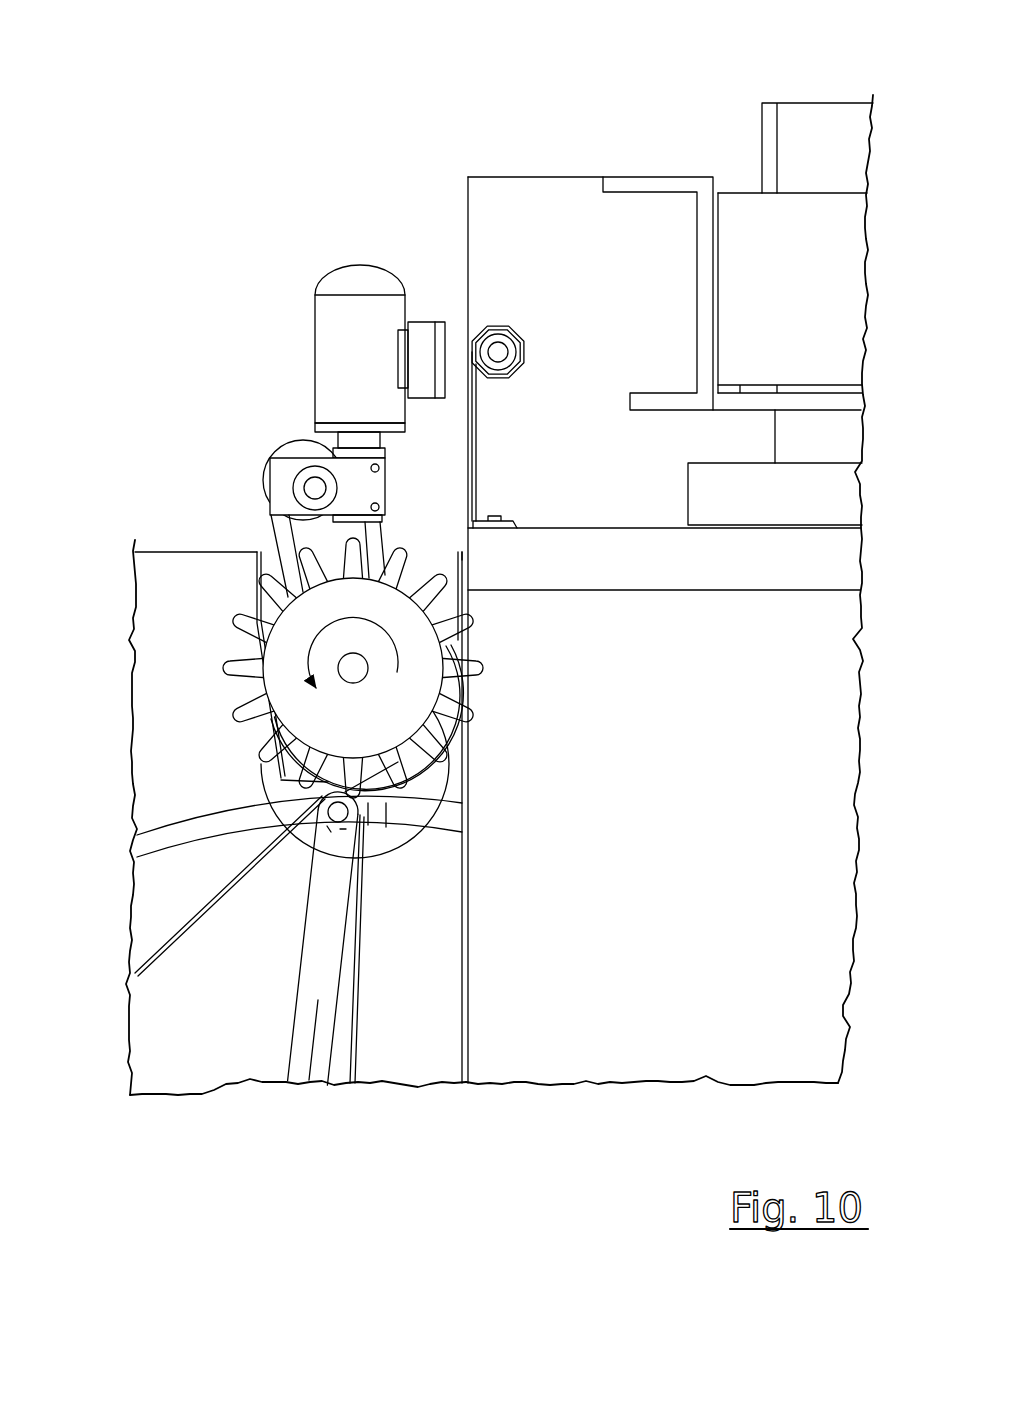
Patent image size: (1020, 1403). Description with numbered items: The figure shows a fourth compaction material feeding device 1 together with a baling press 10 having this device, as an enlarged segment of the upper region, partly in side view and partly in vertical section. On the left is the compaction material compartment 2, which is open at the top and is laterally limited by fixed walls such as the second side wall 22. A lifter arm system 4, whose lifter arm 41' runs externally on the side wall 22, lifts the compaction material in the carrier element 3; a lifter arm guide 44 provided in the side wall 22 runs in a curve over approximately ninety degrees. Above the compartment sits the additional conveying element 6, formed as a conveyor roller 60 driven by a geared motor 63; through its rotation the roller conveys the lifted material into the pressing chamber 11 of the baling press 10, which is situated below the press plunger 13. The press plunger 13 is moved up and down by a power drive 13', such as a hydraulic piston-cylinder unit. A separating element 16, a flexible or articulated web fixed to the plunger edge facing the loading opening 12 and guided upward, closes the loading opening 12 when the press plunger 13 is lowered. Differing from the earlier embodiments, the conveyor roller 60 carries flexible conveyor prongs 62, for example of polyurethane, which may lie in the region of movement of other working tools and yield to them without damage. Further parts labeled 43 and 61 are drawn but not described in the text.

The compaction material feeding device 1 is at (190, 312).
The compaction material compartment 2 is at (197, 598).
The carrier element 3 is at (206, 891).
The lifter arm system 4 is at (296, 965).
The additional conveying element 6 is at (417, 532).
The baling press 10 is at (734, 86).
The pressing chamber 11 is at (698, 860).
The loading opening 12 is at (465, 1005).
The press plunger 13 is at (665, 541).
The power drive 13' is at (764, 148).
The separating element 16 is at (474, 437).
The second side wall 22 is at (200, 1031).
The lifter arm 41' is at (273, 1026).
The pivot joint 43 is at (312, 862).
The lifter arm guide 44 is at (213, 822).
The conveyor roller 60 is at (423, 650).
The rotation axis 61 is at (357, 671).
The flexible conveyor prongs 62 is at (453, 722).
The geared motor 63 is at (332, 412).